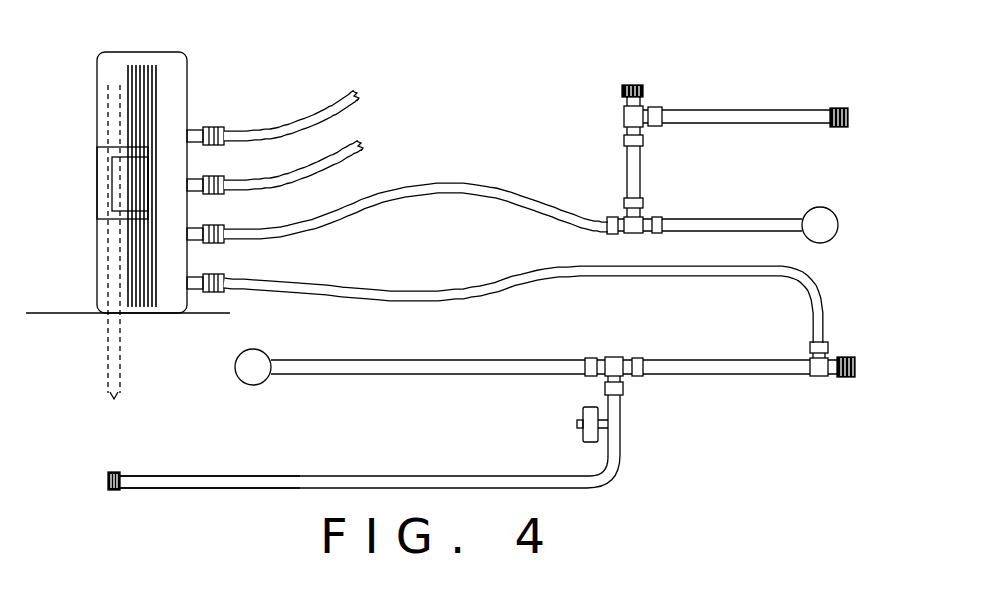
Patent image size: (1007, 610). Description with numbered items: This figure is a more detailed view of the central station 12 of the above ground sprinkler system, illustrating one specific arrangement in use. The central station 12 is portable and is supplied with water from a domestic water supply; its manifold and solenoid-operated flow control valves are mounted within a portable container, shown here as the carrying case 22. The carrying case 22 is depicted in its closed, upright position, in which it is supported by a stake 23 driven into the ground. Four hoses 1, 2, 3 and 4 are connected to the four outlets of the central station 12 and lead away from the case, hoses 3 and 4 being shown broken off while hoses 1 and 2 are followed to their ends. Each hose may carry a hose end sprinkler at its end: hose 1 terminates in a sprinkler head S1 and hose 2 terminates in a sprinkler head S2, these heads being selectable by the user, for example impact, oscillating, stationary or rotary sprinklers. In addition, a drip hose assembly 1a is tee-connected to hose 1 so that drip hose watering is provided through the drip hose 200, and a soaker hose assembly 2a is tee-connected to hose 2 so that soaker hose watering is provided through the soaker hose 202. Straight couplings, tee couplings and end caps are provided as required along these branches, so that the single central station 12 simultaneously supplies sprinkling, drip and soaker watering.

The central station 12 is at (238, 85).
The carrying case 22 is at (172, 47).
The stake 23 is at (104, 127).
The hose 1 is at (402, 283).
The hose 2 is at (455, 184).
The hose 3 is at (340, 143).
The hose 4 is at (308, 116).
The drip hose assembly 1a is at (286, 476).
The soaker hose assembly 2a is at (717, 110).
The drip hose 200 is at (445, 476).
The soaker hose 202 is at (773, 125).
The sprinkler head S1 is at (235, 367).
The sprinkler head S2 is at (835, 225).